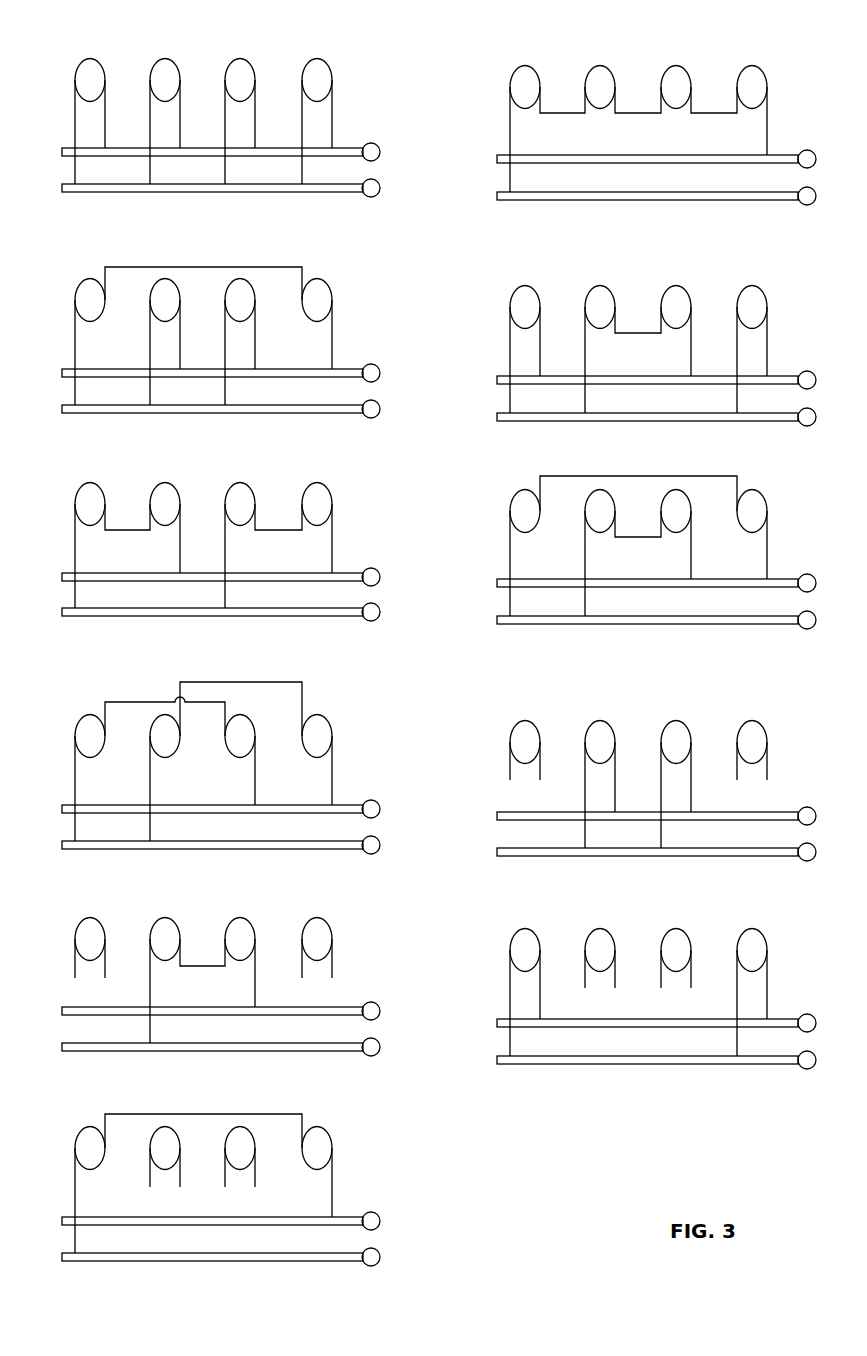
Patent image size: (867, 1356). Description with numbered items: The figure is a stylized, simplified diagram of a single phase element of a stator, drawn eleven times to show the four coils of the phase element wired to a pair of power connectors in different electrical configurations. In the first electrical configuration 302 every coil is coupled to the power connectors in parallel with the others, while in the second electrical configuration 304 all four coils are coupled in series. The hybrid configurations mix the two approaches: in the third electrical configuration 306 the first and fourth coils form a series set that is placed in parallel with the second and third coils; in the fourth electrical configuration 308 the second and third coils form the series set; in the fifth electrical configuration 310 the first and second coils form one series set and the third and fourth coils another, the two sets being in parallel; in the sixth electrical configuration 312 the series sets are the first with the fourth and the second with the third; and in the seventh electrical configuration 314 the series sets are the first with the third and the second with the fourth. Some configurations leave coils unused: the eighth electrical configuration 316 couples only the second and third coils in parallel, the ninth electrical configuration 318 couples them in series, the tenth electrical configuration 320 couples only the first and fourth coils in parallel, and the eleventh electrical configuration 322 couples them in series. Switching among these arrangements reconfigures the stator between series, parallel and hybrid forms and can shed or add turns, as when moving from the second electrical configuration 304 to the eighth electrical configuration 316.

The first electrical configuration 302 is at (103, 41).
The second electrical configuration 304 is at (557, 42).
The third electrical configuration 306 is at (104, 237).
The fourth electrical configuration 308 is at (561, 238).
The fifth electrical configuration 310 is at (112, 446).
The sixth electrical configuration 312 is at (566, 447).
The seventh electrical configuration 314 is at (112, 670).
The eighth electrical configuration 316 is at (547, 670).
The ninth electrical configuration 318 is at (112, 882).
The tenth electrical configuration 320 is at (566, 882).
The eleventh electrical configuration 322 is at (112, 1085).